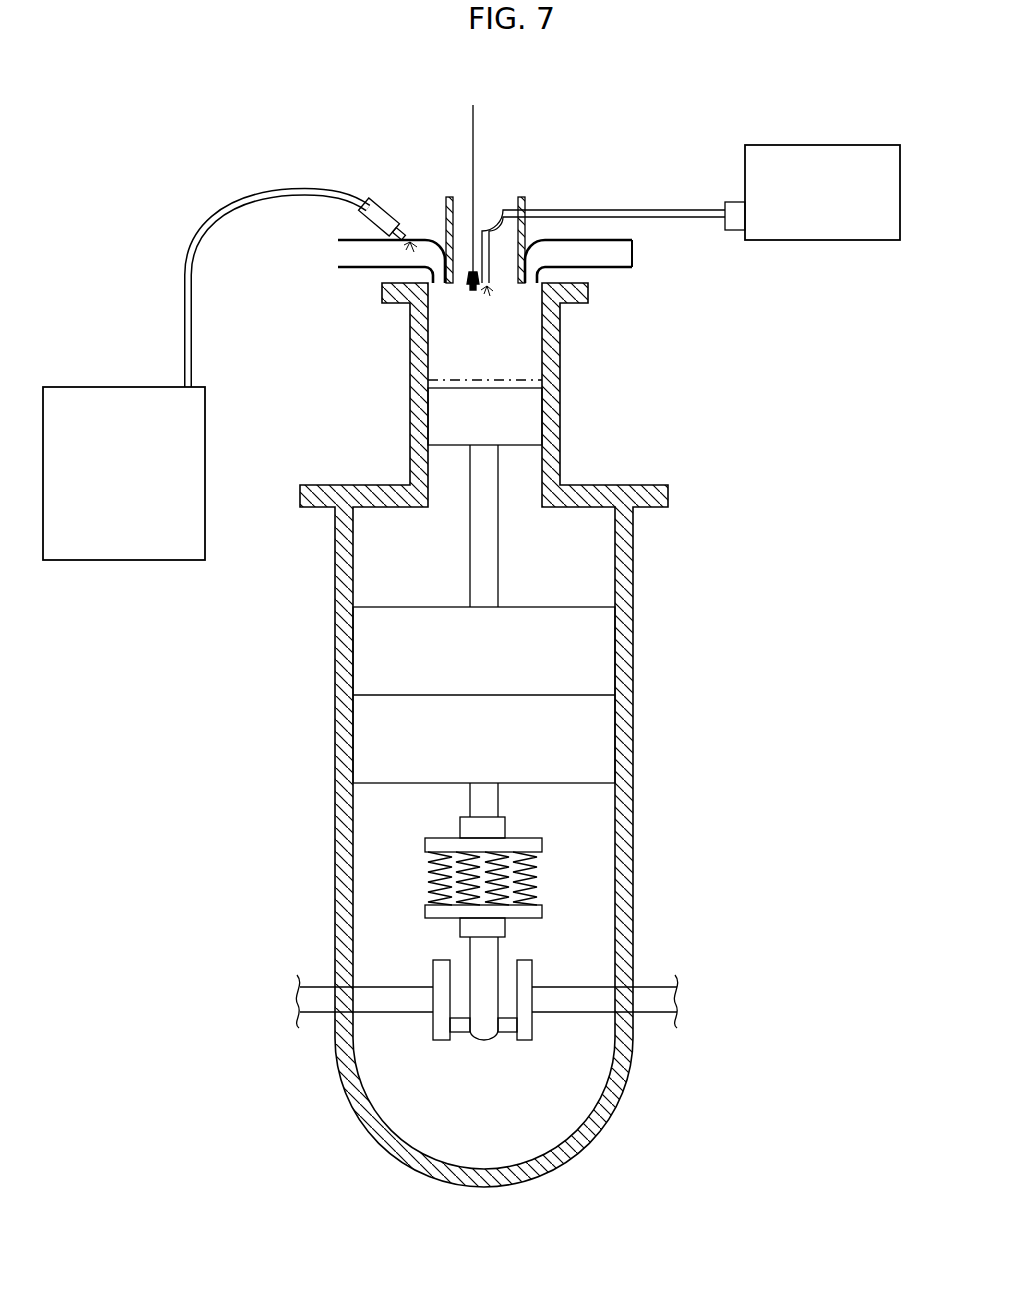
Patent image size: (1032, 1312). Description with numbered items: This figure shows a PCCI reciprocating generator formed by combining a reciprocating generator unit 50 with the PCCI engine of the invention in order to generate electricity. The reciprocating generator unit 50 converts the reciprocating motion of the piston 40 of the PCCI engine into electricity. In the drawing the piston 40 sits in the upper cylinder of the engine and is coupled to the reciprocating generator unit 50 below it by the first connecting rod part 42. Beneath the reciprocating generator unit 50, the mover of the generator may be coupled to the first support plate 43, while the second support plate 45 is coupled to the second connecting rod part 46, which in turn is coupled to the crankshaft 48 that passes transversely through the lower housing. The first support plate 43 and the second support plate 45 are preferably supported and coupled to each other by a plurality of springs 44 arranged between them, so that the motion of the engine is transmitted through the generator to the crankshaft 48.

The piston 40 is at (505, 410).
The first connecting rod part 42 is at (493, 540).
The reciprocating generator unit 50 is at (588, 681).
The first support plate 43 is at (545, 838).
The springs 44 is at (545, 870).
The second support plate 45 is at (545, 907).
The second connecting rod part 46 is at (487, 958).
The crankshaft 48 is at (572, 1012).